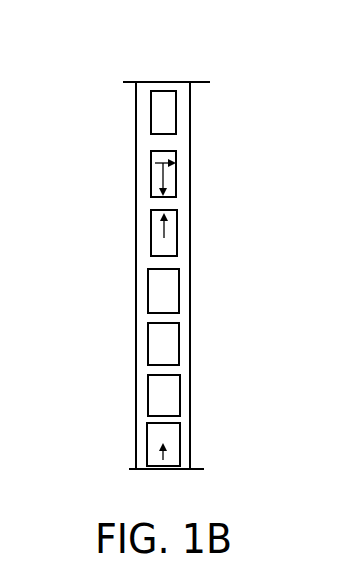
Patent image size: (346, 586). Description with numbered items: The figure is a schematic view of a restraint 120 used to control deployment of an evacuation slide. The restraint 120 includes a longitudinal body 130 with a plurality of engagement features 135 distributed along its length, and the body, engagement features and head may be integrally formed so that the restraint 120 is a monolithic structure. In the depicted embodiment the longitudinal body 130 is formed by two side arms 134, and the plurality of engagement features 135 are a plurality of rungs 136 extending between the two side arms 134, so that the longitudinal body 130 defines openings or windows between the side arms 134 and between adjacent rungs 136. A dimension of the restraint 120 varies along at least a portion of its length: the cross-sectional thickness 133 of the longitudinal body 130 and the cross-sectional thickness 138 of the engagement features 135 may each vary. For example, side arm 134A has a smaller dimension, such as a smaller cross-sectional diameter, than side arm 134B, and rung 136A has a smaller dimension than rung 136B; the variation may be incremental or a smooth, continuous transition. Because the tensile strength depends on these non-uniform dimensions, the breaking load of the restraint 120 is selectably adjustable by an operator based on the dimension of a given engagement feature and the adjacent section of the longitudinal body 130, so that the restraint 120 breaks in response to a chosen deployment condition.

The restraint 120 is at (79, 45).
The longitudinal body 130 is at (198, 239).
The cross-sectional thickness 133 is at (198, 163).
The side arms 134 is at (178, 287).
The side arm 134A is at (143, 416).
The side arm 134B is at (146, 141).
The engagement features 135 is at (163, 460).
The rungs 136 is at (165, 318).
The rung 136A is at (162, 418).
The rung 136B is at (167, 143).
The cross-sectional thickness 138 is at (168, 230).